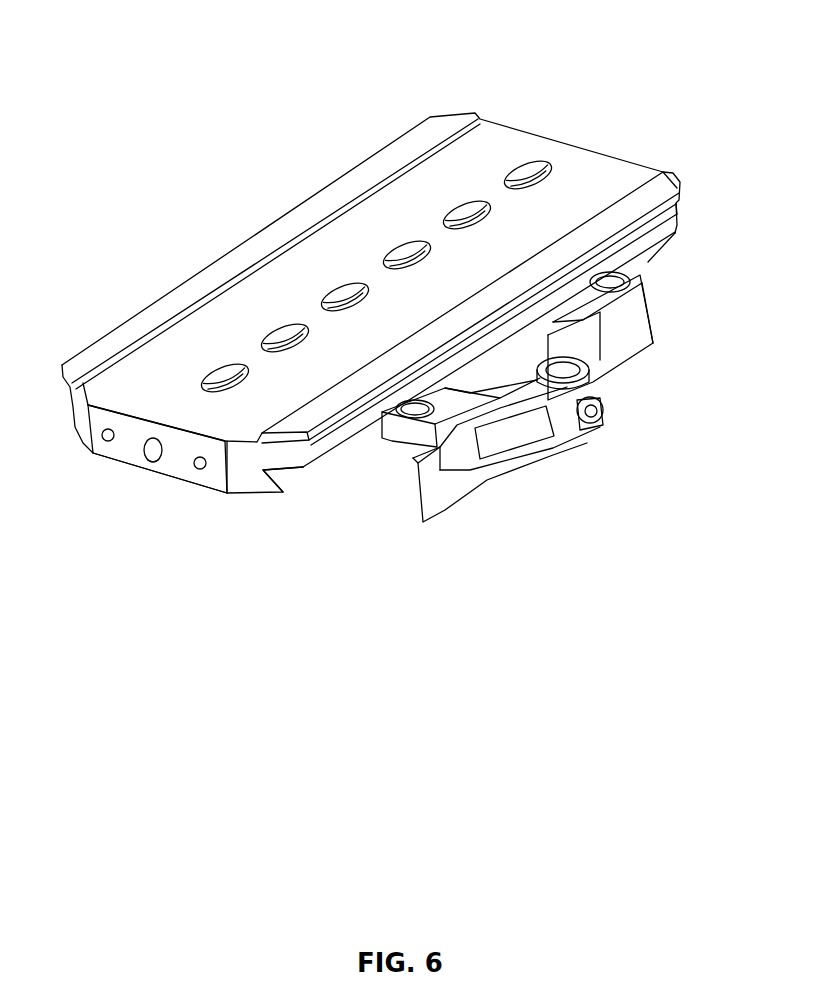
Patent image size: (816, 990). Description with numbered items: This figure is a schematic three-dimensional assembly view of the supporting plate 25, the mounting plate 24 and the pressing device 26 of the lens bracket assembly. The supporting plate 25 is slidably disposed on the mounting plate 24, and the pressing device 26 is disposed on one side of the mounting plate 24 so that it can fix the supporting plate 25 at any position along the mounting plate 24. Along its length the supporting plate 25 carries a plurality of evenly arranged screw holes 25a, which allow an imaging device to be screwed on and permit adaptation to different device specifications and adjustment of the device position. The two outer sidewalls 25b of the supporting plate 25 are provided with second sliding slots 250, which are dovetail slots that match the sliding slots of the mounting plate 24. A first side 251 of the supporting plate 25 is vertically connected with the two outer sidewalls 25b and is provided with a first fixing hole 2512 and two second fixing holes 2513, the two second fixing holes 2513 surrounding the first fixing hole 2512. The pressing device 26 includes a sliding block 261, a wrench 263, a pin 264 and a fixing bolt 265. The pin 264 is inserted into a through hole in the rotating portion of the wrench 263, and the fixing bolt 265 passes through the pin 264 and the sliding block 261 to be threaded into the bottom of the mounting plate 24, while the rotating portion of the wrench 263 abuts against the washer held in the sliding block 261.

The supporting plate 25 is at (498, 153).
The screw holes 25a is at (552, 167).
The outer sidewalls 25b is at (680, 203).
The first side 251 is at (180, 472).
The first fixing hole 2512 is at (108, 442).
The second fixing holes 2513 is at (203, 470).
The second sliding slots 250 is at (300, 468).
The pressing device 26 is at (555, 433).
The sliding block 261 is at (643, 280).
The wrench 263 is at (433, 487).
The pin 264 is at (603, 403).
The fixing bolt 265 is at (593, 397).
The mounting plate 24 is at (623, 348).